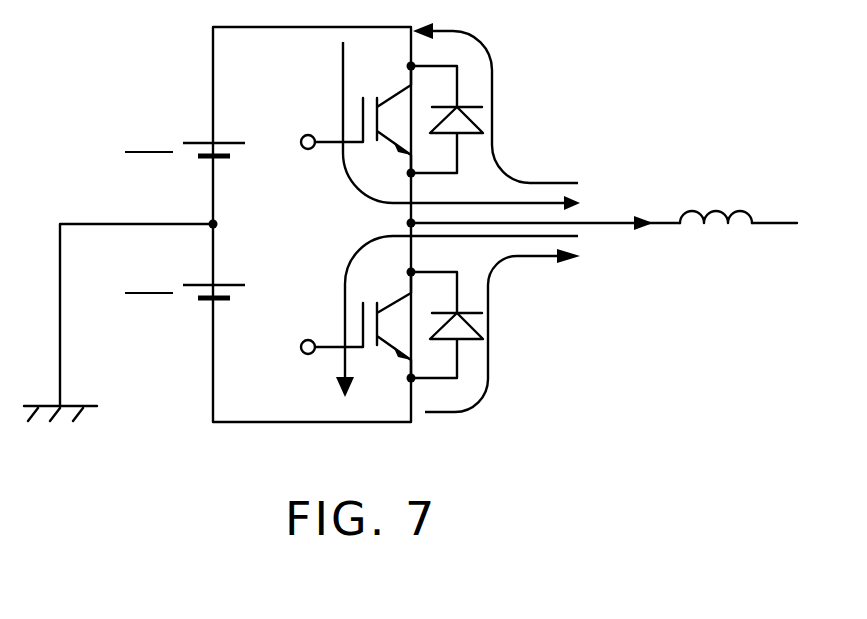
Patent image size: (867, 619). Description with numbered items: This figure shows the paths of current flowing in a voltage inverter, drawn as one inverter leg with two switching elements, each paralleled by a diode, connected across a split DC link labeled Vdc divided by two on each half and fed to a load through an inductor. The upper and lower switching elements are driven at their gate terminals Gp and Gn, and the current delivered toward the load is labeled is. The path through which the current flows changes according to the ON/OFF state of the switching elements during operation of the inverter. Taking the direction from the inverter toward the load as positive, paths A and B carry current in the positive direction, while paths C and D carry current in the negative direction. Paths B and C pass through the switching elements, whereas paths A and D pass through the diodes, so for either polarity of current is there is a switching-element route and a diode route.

The DC link half voltage Vdc/2 Vdc is at (184, 221).
The gate terminal of upper IGBT Gp is at (288, 148).
The gate terminal of lower IGBT Gn is at (288, 351).
The path of current flowing in the positive direction through a diode A is at (502, 330).
The path of current flowing in the positive direction through a switching element B is at (448, 126).
The path of current flowing in the negative direction through a switching element C is at (448, 316).
The path of current flowing in the negative direction through a diode D is at (495, 103).
The output current is is at (642, 201).